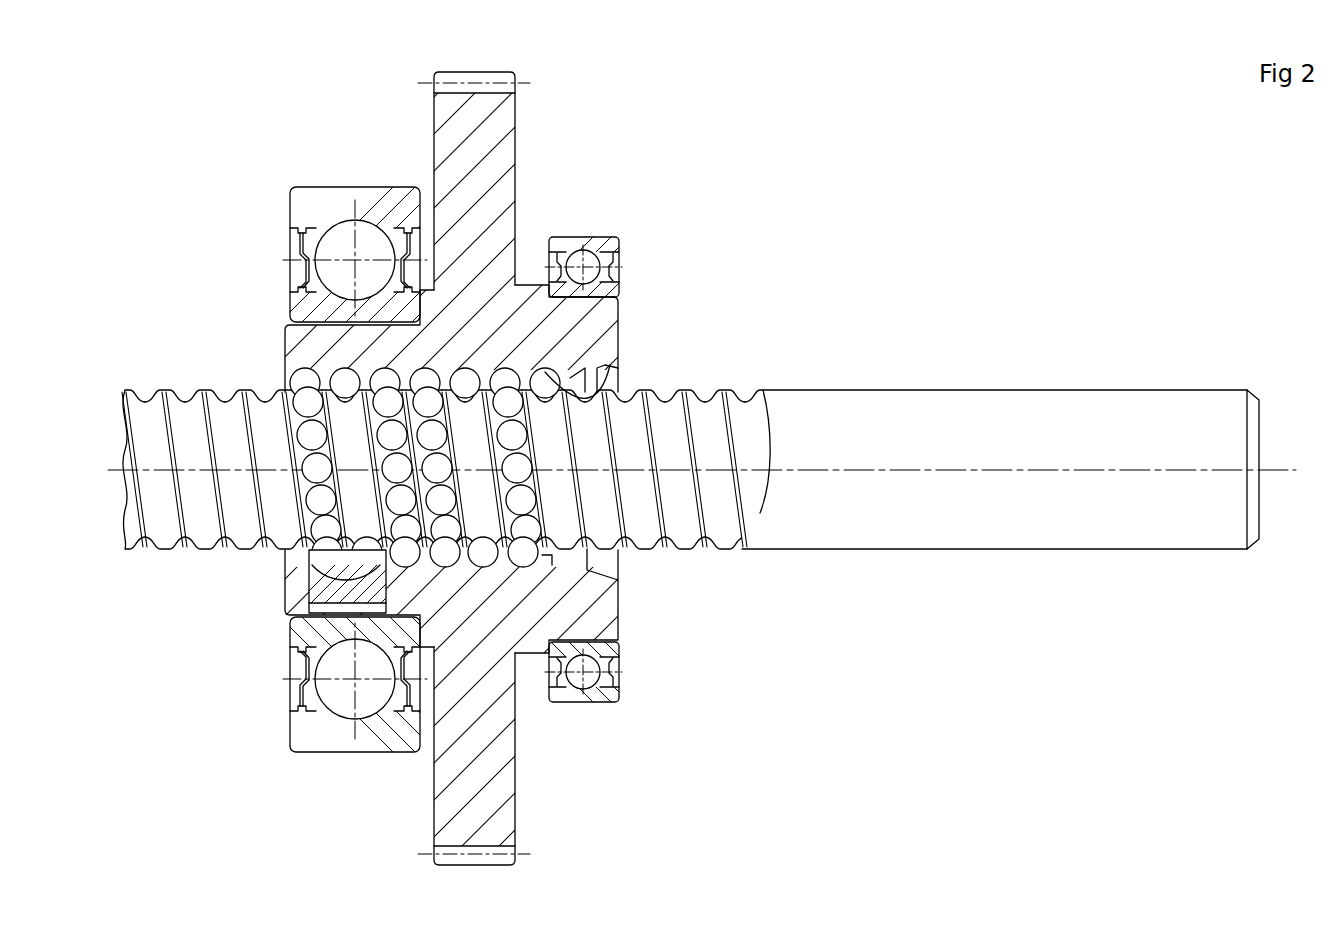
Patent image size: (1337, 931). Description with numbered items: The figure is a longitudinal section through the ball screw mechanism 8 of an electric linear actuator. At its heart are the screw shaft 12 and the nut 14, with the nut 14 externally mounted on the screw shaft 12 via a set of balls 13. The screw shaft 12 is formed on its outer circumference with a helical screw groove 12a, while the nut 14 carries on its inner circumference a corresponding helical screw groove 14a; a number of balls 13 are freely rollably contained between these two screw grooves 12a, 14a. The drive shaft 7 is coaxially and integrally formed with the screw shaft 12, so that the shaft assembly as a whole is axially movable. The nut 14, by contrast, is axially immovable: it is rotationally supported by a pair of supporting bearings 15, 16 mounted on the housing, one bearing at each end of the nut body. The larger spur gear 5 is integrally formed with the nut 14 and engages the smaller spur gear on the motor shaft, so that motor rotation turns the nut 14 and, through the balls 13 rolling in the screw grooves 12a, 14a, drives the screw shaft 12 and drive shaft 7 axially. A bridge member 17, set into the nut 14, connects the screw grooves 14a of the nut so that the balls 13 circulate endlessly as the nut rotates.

The larger spur gear 5 is at (452, 122).
The drive shaft 7 is at (920, 402).
The ball screw mechanism 8 is at (639, 296).
The screw shaft 12 is at (549, 435).
The helical screw groove 12a is at (700, 400).
The balls 13 is at (387, 382).
The nut 14 is at (280, 341).
The helical screw groove 14a is at (617, 391).
The supporting bearing 15 is at (328, 212).
The supporting bearing 16 is at (568, 246).
The bridge member 17 is at (322, 591).